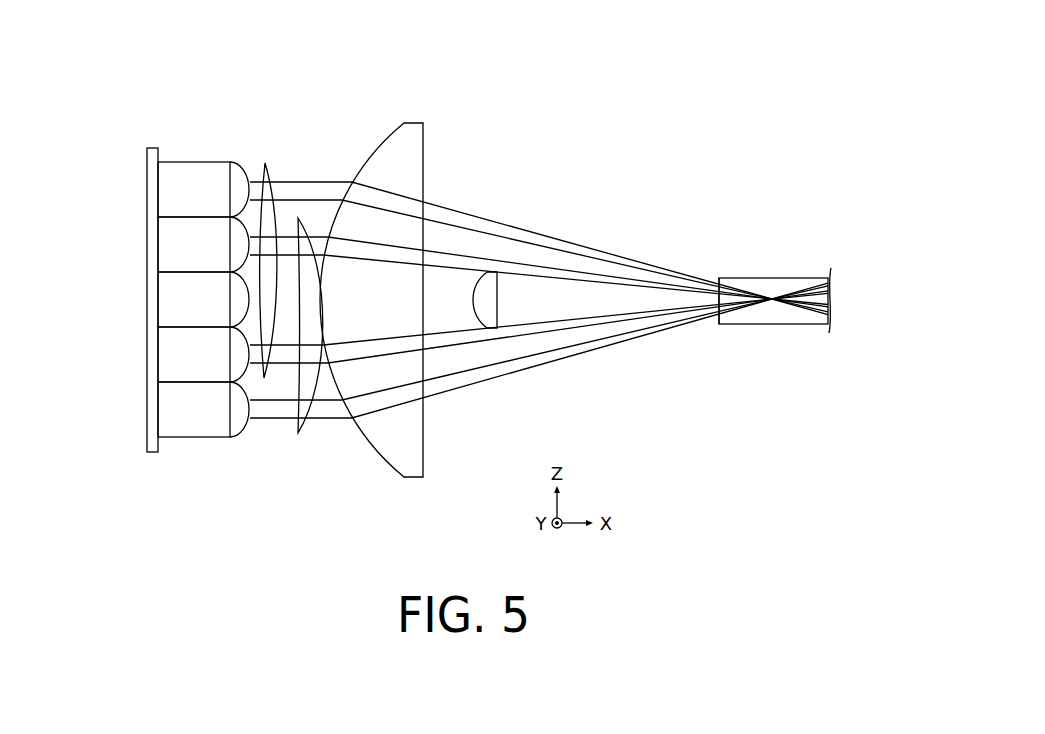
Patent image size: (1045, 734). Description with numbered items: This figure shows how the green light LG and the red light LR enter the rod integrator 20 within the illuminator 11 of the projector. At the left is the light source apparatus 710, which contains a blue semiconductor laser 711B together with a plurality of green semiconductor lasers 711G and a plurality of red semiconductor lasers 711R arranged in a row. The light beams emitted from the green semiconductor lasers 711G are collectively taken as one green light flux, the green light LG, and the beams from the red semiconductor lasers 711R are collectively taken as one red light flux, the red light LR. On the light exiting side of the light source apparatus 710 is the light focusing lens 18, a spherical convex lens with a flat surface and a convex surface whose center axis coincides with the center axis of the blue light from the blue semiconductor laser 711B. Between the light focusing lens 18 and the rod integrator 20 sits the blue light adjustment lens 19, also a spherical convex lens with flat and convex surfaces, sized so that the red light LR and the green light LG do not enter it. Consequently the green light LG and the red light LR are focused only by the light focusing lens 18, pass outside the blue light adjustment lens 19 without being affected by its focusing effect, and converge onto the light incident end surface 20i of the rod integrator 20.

The light source apparatus 710 is at (163, 126).
The green semiconductor laser 711G is at (177, 190).
The red semiconductor laser 711R is at (175, 245).
The blue semiconductor laser 711B is at (175, 303).
The green light LG is at (266, 165).
The red light LR is at (298, 225).
The light focusing lens 18 is at (390, 158).
The illuminator 11 is at (462, 126).
The blue light adjustment lens 19 is at (478, 285).
The rod integrator 20 is at (773, 284).
The light incident end surface 20i is at (717, 322).